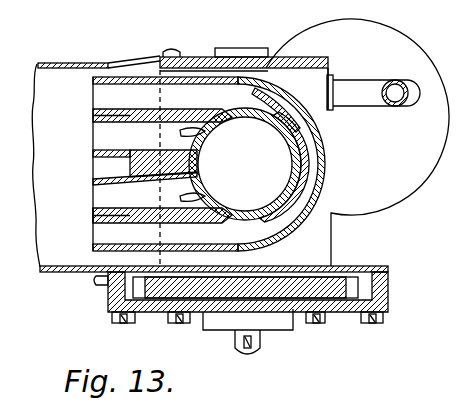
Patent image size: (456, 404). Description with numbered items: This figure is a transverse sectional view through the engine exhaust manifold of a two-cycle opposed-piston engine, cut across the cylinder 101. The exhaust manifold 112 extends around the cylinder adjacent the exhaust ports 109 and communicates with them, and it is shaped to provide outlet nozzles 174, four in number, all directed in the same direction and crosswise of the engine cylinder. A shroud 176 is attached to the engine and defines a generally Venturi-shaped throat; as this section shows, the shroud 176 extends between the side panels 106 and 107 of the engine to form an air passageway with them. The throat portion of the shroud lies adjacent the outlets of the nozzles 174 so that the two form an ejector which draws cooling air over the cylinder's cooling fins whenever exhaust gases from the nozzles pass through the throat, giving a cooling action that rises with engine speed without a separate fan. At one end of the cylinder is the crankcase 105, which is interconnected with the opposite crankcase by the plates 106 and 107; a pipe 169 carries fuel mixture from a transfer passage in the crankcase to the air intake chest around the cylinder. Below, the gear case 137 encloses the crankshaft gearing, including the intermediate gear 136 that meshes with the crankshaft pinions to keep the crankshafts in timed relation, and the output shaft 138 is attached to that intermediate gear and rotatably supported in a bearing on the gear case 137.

The cylinder 101 is at (302, 168).
The crankcase 105 is at (318, 78).
The plate 106 is at (292, 60).
The plate 107 is at (344, 266).
The exhaust ports 109 is at (233, 114).
The exhaust manifold 112 is at (281, 24).
The intermediate gear 136 is at (315, 287).
The gear case 137 is at (385, 290).
The output shaft 138 is at (262, 345).
The pipe 169 is at (397, 88).
The outlet nozzles 174 is at (102, 242).
The shroud 176 is at (110, 37).